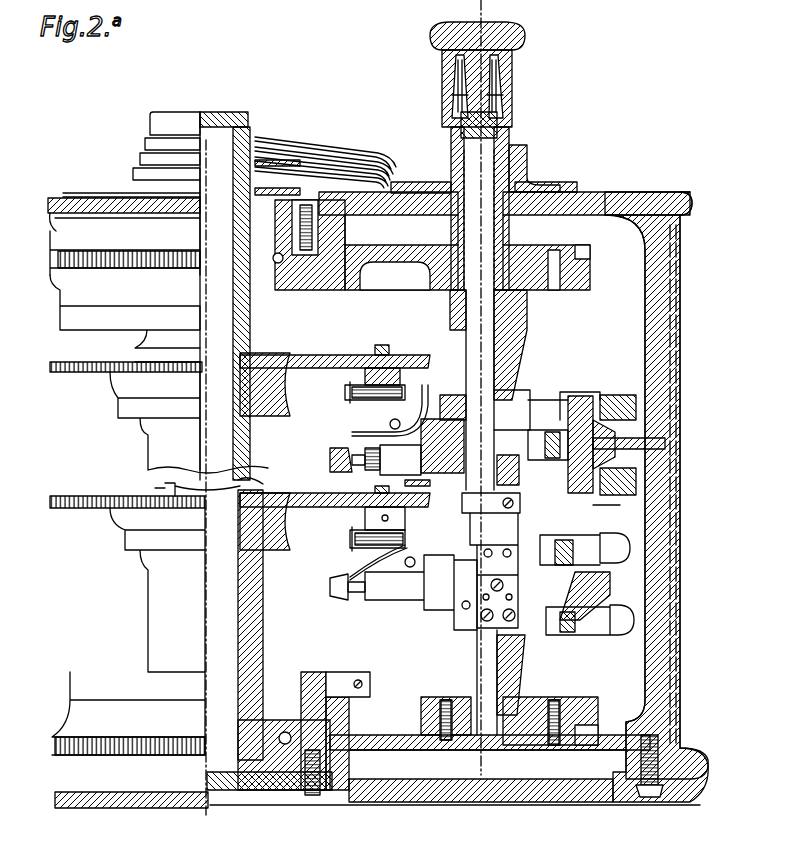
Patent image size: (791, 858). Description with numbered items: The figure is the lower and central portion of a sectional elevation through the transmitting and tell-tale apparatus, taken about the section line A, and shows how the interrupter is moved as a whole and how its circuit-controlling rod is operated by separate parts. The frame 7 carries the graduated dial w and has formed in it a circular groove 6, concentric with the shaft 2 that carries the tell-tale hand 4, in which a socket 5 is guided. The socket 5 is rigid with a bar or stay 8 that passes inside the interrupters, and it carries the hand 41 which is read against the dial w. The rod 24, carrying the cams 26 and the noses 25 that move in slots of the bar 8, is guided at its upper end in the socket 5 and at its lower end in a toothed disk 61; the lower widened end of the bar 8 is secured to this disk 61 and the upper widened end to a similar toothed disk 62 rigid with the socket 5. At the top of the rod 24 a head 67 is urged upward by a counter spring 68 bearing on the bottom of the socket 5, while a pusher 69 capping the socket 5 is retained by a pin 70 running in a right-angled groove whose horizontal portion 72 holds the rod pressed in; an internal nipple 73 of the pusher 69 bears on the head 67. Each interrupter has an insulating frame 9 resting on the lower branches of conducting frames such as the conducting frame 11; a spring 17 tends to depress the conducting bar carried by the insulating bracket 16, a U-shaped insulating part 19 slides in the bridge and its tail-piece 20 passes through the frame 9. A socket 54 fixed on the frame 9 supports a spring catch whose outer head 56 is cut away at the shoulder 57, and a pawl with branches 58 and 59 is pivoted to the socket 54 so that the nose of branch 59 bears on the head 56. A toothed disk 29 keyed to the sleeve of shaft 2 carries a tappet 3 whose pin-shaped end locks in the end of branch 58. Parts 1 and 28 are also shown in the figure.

The pusher 69 is at (445, 30).
The section line A A is at (460, 6).
The internal nipple 73 is at (500, 70).
The retaining pin 70 is at (500, 90).
The conducting frame 11 is at (502, 108).
The horizontal portion of groove 72 is at (500, 122).
The socket 5 is at (520, 172).
The hand 41 is at (515, 178).
The circular groove 6 is at (545, 188).
The frame 7 is at (640, 200).
The counter spring 68 is at (458, 152).
The head 67 is at (534, 167).
The graduated dial w is at (415, 185).
The tell-tale hand 4 is at (308, 150).
The toothed disk 62 is at (565, 245).
The bar or stay 8 is at (515, 340).
The frame 1 is at (652, 322).
The rod 24 is at (478, 362).
The spring 17 is at (565, 420).
The cams 26 is at (520, 430).
The noses 25 is at (515, 408).
The toothed disk 29 is at (300, 362).
The tappet 3 is at (400, 395).
The pawl branch 58 is at (425, 415).
The outer head of spring catch 56 is at (345, 448).
The pawl branch 59 is at (392, 425).
The socket 54 is at (405, 455).
The cut-away shoulder 57 is at (370, 460).
The insulating tail-piece 20 is at (430, 470).
The insulating frame 9 is at (450, 476).
The U-shaped insulating part 19 is at (455, 490).
The insulating bracket 16 is at (550, 460).
The knob 28 is at (585, 490).
The toothed disk 61 is at (578, 728).
The shaft 2 is at (262, 470).